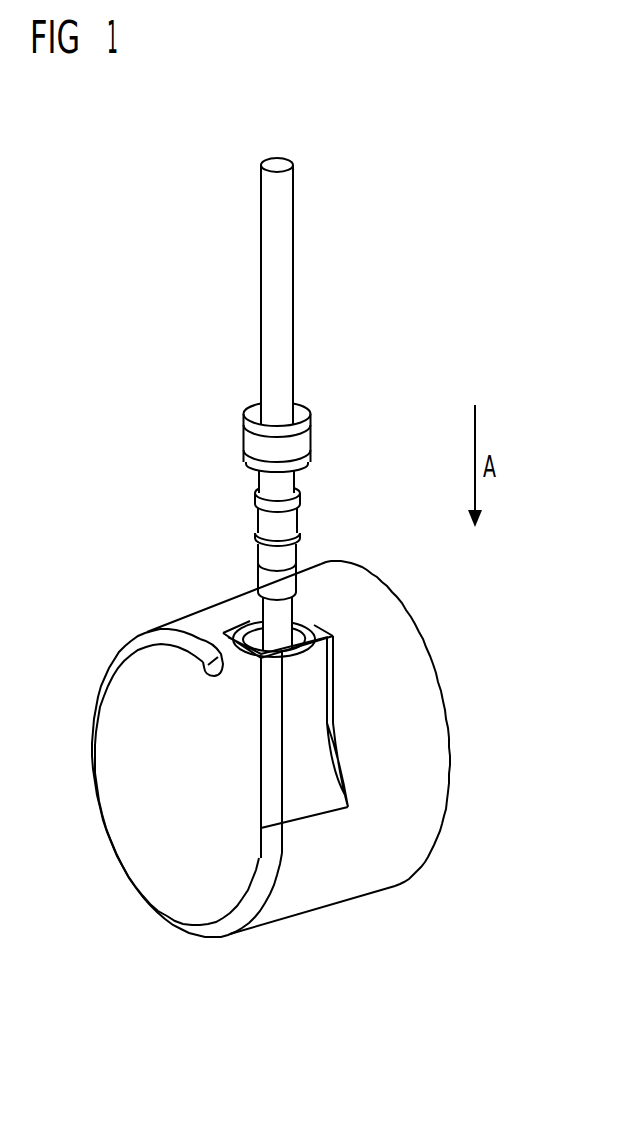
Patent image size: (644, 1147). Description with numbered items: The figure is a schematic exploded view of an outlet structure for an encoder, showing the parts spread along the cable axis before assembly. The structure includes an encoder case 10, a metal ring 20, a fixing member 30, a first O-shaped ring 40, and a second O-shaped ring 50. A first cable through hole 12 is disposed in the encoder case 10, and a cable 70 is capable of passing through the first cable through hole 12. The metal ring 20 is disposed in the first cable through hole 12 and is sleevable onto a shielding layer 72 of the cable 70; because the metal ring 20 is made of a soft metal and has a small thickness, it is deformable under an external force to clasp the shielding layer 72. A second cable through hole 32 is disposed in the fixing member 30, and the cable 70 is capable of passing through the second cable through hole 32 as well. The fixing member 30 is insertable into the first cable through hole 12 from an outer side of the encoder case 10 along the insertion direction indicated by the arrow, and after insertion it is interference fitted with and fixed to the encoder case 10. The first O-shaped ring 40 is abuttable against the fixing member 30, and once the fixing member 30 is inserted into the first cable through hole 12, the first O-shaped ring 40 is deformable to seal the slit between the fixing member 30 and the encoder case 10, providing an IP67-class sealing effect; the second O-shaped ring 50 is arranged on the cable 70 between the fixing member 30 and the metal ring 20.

The encoder case 10 is at (368, 632).
The first cable through hole 12 is at (297, 622).
The metal ring 20 is at (287, 530).
The fixing member 30 is at (297, 447).
The second cable through hole 32 is at (305, 408).
The first O-shaped ring 40 is at (245, 453).
The second O-shaped ring 50 is at (250, 495).
The cable 70 is at (275, 367).
The shielding layer 72 is at (268, 587).